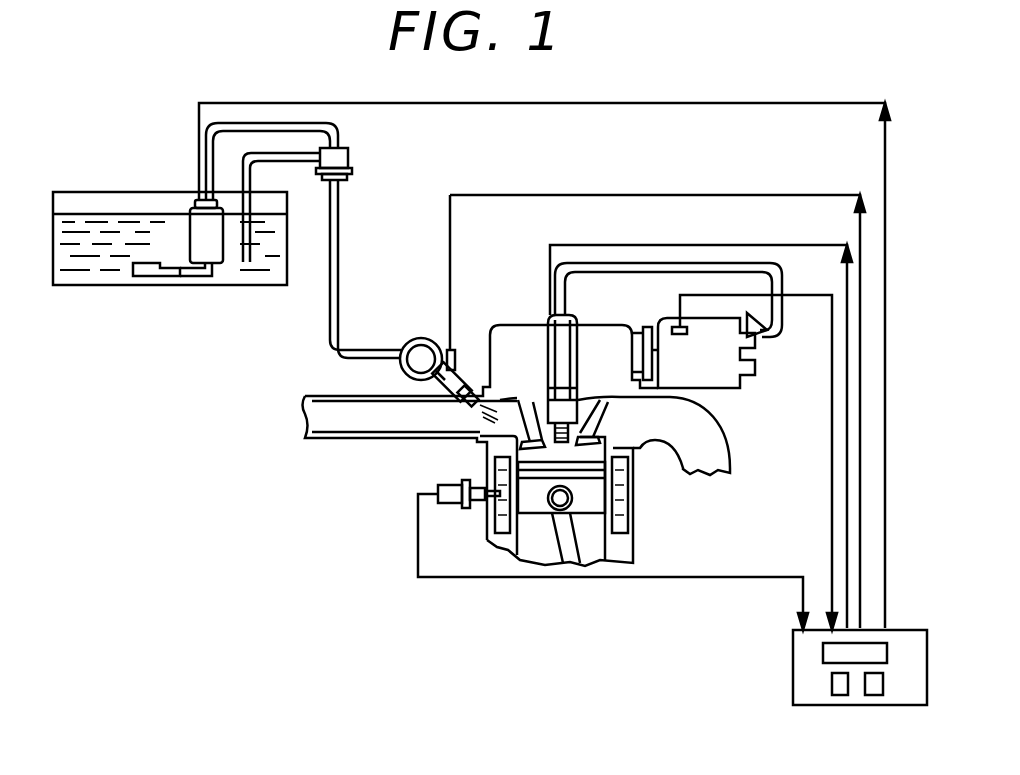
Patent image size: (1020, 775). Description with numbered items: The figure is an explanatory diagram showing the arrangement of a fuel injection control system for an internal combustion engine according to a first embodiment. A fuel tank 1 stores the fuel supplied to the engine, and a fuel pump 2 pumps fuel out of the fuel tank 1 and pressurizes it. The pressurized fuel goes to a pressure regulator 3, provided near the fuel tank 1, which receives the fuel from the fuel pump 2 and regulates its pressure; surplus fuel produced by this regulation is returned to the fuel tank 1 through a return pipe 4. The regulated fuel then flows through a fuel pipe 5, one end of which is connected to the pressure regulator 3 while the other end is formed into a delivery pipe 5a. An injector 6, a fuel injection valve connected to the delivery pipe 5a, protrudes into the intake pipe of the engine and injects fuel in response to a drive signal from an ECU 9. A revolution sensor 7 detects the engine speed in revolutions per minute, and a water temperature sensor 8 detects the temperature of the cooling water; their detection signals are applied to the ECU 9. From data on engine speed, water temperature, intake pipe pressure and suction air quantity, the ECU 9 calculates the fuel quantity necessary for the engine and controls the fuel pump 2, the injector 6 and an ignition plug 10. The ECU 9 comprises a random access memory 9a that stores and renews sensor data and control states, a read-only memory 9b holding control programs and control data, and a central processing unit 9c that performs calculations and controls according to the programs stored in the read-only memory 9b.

The fuel tank 1 is at (120, 192).
The fuel pump 2 is at (215, 258).
The pressure regulator 3 is at (346, 158).
The return pipe 4 is at (298, 160).
The fuel pipe 5 is at (340, 225).
The delivery pipe 5a is at (421, 350).
The injector 6 is at (458, 376).
The revolution sensor 7 is at (683, 337).
The water temperature sensor 8 is at (448, 478).
The ECU 9 is at (793, 660).
The random access memory 9a is at (840, 690).
The read-only memory 9b is at (873, 690).
The central processing unit 9c is at (882, 648).
The ignition plug 10 is at (562, 348).